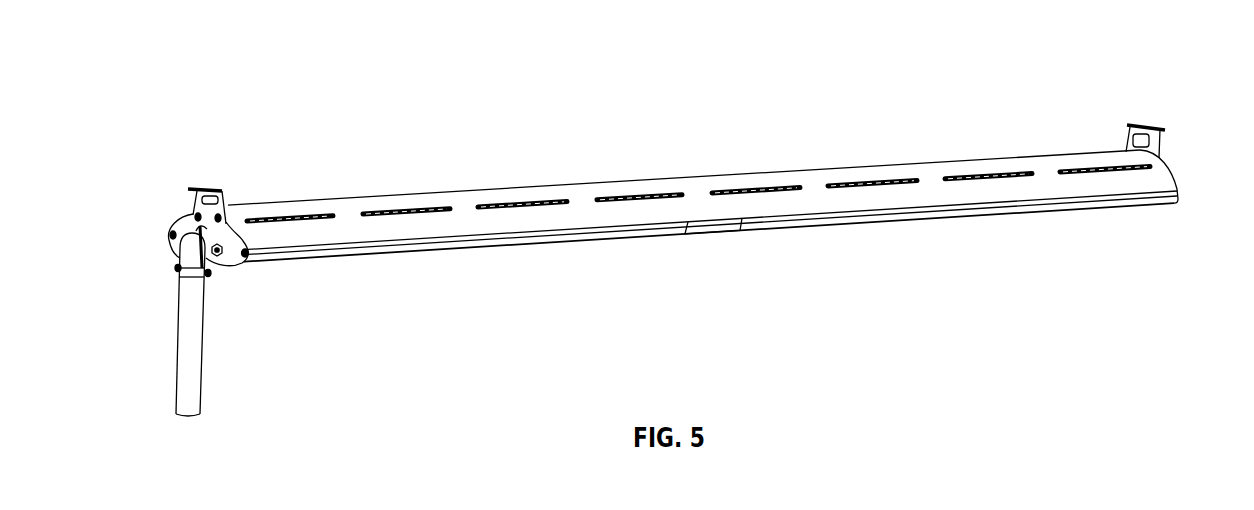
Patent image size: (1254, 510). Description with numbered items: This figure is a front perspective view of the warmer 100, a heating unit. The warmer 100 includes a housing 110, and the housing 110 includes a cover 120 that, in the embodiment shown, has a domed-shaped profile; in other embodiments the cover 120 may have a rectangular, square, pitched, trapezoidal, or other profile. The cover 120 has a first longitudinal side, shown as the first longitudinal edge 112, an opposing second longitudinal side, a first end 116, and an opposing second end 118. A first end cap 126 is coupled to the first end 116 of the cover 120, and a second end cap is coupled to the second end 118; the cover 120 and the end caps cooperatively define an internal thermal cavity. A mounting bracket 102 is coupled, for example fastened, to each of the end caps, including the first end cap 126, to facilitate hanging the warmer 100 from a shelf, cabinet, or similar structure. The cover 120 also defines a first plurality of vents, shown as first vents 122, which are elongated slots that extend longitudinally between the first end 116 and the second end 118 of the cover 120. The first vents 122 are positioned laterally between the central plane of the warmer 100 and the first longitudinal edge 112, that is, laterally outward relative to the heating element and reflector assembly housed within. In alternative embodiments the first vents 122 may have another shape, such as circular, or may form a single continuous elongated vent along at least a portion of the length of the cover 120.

The warmer 100 is at (252, 90).
The mounting bracket 102 is at (216, 189).
The housing 110 is at (458, 205).
The first longitudinal edge 112 is at (612, 243).
The first end 116 is at (158, 219).
The second end 118 is at (1199, 182).
The cover 120 is at (702, 192).
The first vents 122 is at (524, 207).
The first end cap 126 is at (235, 257).